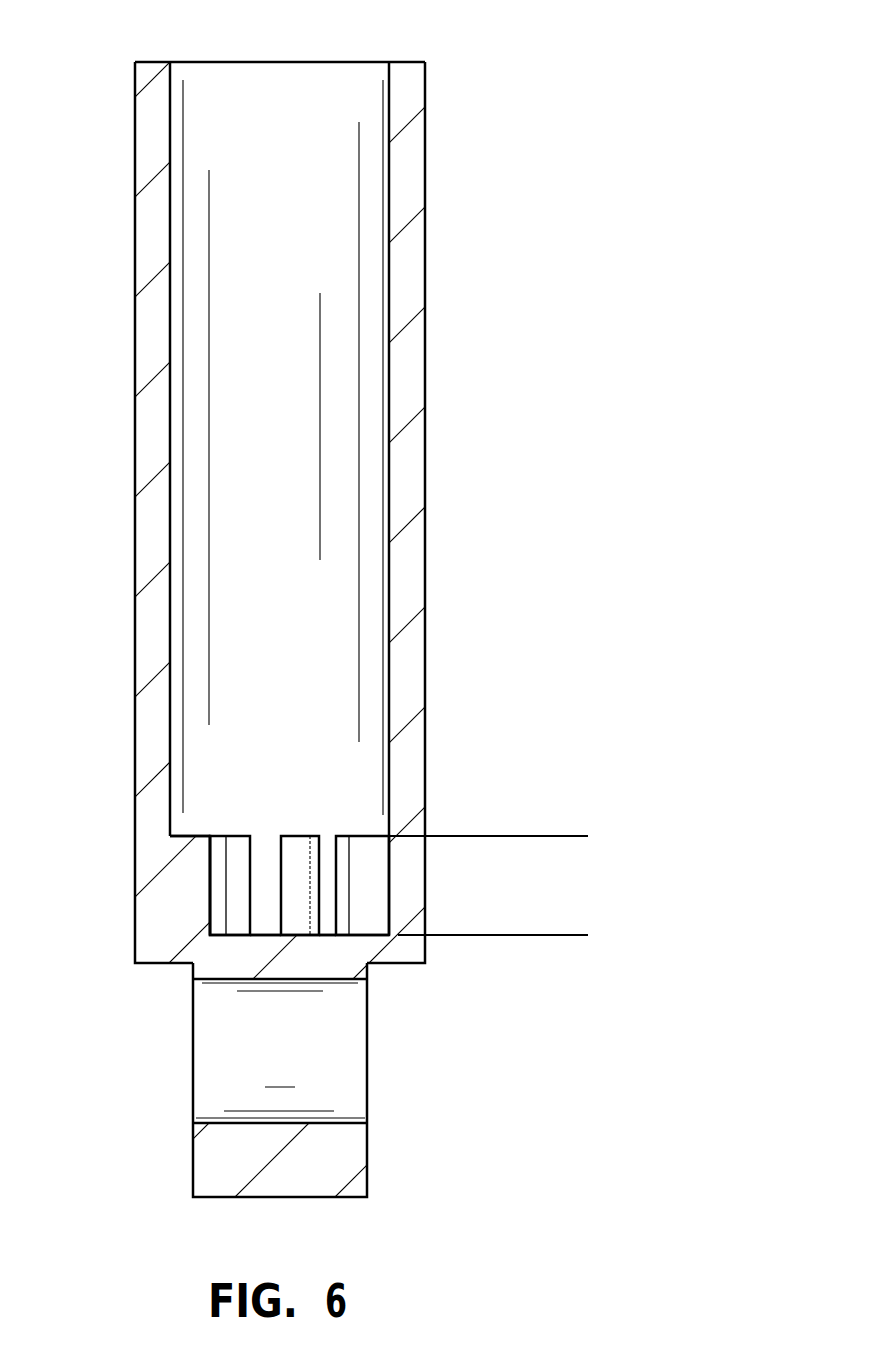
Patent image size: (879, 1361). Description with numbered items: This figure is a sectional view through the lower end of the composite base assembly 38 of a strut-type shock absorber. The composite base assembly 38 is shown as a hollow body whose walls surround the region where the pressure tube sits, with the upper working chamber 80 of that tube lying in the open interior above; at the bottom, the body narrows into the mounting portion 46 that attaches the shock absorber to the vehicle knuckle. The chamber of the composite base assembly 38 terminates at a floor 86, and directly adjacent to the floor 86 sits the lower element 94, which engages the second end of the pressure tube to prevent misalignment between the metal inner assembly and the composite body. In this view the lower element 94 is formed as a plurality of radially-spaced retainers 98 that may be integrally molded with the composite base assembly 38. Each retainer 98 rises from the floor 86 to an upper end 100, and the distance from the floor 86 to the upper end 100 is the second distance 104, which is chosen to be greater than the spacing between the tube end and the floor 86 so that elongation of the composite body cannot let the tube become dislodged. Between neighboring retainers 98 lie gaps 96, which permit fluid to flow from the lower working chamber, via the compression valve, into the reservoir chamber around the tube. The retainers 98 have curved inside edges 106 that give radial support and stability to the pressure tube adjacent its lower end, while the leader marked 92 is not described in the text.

The composite base assembly 38 is at (490, 201).
The top wall 92 is at (403, 62).
The upper working chamber 80 is at (287, 508).
The lower element 94 is at (188, 917).
The floor 86 is at (264, 927).
The gap 96 is at (258, 836).
The curved inside edges 106 is at (333, 877).
The upper end 100 is at (198, 835).
The retainers 98 is at (183, 886).
The second distance 104 is at (522, 846).
The mounting portion 46 is at (312, 1048).